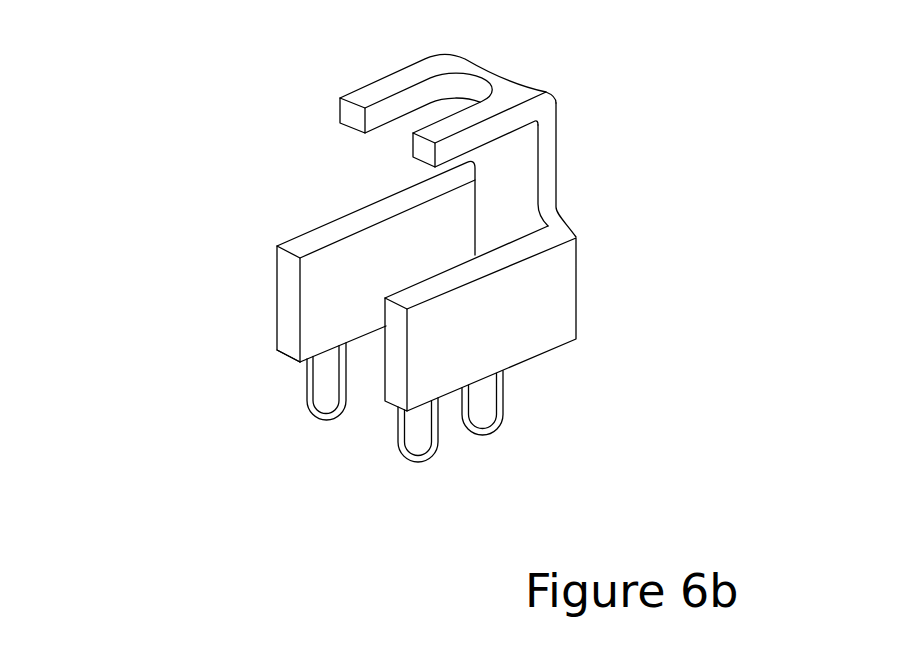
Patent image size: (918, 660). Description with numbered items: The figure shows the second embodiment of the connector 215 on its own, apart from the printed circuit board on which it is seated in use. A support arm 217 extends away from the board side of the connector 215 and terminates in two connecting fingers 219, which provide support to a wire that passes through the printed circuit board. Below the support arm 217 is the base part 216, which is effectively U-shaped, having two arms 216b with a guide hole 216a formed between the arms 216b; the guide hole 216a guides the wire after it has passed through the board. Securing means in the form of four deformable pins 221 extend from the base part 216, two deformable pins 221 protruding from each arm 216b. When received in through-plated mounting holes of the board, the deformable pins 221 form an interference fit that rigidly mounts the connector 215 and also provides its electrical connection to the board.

The connector 215 is at (384, 330).
The connecting fingers 219 is at (429, 147).
The support arm 217 is at (554, 147).
The base part 216 is at (284, 376).
The arms 216b is at (288, 345).
The guide hole 216a is at (370, 363).
The deformable pins 221 is at (466, 431).